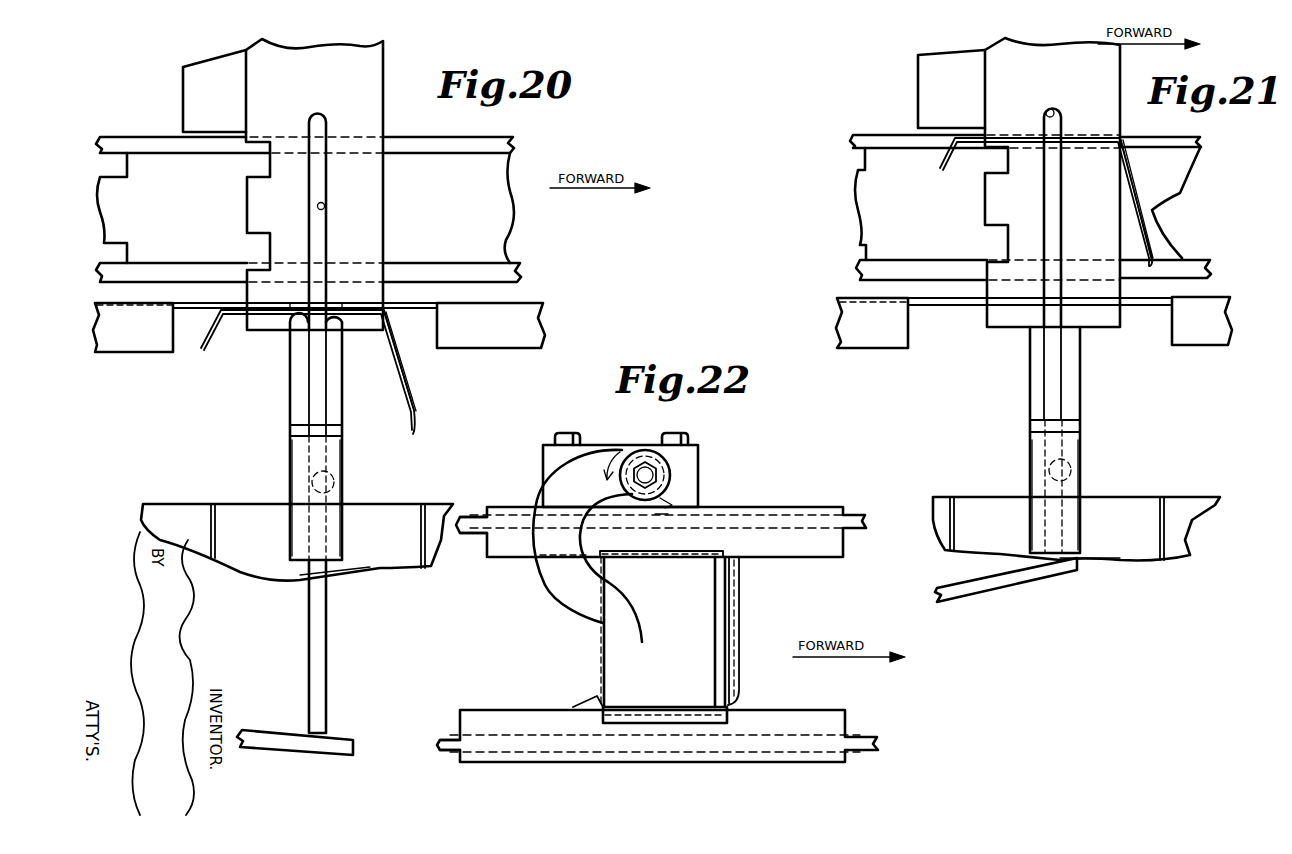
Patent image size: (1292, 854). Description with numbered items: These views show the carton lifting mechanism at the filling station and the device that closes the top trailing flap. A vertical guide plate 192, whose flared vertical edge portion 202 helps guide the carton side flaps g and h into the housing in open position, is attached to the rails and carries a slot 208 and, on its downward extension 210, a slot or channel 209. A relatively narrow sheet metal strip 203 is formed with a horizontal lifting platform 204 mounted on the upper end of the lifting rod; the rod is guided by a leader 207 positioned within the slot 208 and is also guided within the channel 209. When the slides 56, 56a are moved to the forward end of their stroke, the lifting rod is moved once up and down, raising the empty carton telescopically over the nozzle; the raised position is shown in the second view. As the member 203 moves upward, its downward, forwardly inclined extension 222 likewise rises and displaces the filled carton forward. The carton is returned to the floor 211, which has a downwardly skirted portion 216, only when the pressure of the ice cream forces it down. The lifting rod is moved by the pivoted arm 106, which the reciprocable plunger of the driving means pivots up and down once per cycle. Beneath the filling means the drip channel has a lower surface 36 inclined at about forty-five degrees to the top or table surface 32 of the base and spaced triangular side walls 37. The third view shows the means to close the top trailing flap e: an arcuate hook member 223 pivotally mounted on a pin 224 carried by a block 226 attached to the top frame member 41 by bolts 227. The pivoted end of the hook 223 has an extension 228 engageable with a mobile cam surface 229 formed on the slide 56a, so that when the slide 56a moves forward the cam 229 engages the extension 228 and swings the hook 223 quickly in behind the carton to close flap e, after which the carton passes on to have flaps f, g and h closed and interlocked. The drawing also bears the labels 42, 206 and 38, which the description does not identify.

In FIG. 20, the vertical guide plate 192 is at (367, 101).
In FIG. 21, the vertical guide plate 192 is at (1095, 90).
In FIG. 20, the flared vertical edge portion 202 is at (186, 85).
In FIG. 21, the flared vertical edge portion 202 is at (920, 91).
In FIG. 20, the top frame member 41 is at (482, 145).
In FIG. 22, the top frame member 41 is at (822, 523).
In FIG. 21, the top frame member 41 is at (1182, 142).
In FIG. 20, the slide 56a is at (482, 185).
In FIG. 22, the slide 56a is at (476, 518).
In FIG. 21, the slide 56a is at (1166, 240).
In FIG. 20, the lower frame rail 42 is at (512, 277).
In FIG. 21, the lower frame rail 42 is at (1196, 272).
In FIG. 20, the floor 211 is at (420, 303).
In FIG. 21, the floor 211 is at (1205, 301).
In FIG. 20, the downwardly skirted portion 216 is at (515, 326).
In FIG. 21, the downwardly skirted portion 216 is at (1210, 324).
In FIG. 20, the horizontal lifting platform 204 is at (271, 312).
In FIG. 21, the horizontal lifting platform 204 is at (1020, 150).
In FIG. 20, the sheet metal strip 203 is at (418, 371).
In FIG. 21, the sheet metal strip 203 is at (1152, 186).
In FIG. 20, the forwardly inclined extension 222 is at (412, 392).
In FIG. 21, the forwardly inclined extension 222 is at (1152, 212).
In FIG. 20, the leader 207 is at (320, 290).
In FIG. 21, the leader 207 is at (1052, 118).
In FIG. 20, the slot 208 is at (330, 210).
In FIG. 21, the slot 208 is at (1046, 116).
In FIG. 20, the pin guide tube 206 is at (315, 404).
In FIG. 21, the pin guide tube 206 is at (1055, 387).
In FIG. 20, the slot or channel 209 is at (335, 480).
In FIG. 21, the slot or channel 209 is at (1080, 476).
In FIG. 20, the downward extension 210 is at (345, 498).
In FIG. 21, the downward extension 210 is at (1083, 526).
In FIG. 20, the top or table surface 32 is at (200, 504).
In FIG. 21, the top or table surface 32 is at (1186, 497).
In FIG. 20, the triangular side walls 37 is at (216, 540).
In FIG. 21, the triangular side walls 37 is at (955, 528).
In FIG. 20, the lower surface 36 is at (373, 568).
In FIG. 21, the lower surface 36 is at (1106, 548).
In FIG. 20, the arm 106 is at (276, 741).
In FIG. 21, the arm 106 is at (1015, 578).
In FIG. 22, the block 226 is at (550, 463).
In FIG. 22, the bolts 227 is at (566, 438).
In FIG. 22, the pin 224 is at (648, 474).
In FIG. 22, the arcuate hook member 223 is at (583, 478).
In FIG. 22, the extension 228 is at (668, 503).
In FIG. 22, the mobile cam surface 229 is at (663, 514).
In FIG. 22, the carton side flap h is at (676, 557).
In FIG. 22, the top trailing flap e is at (605, 650).
In FIG. 22, the flap f is at (733, 634).
In FIG. 22, the carton side flap g is at (680, 713).
In FIG. 22, the bottom frame rail 38 is at (832, 727).
In FIG. 22, the slide 56 is at (455, 747).